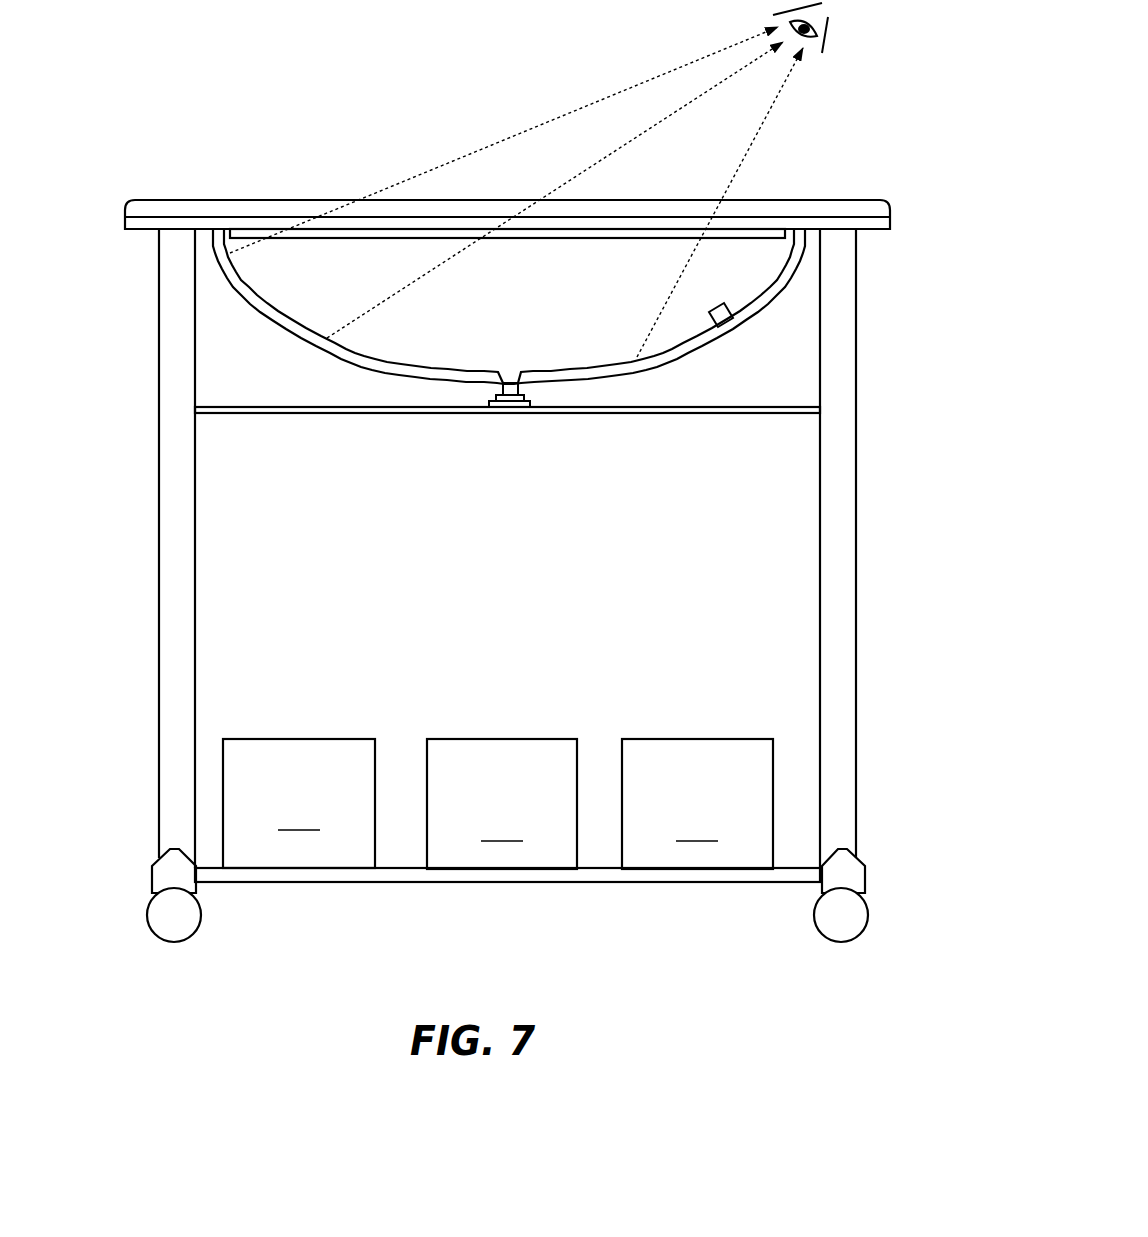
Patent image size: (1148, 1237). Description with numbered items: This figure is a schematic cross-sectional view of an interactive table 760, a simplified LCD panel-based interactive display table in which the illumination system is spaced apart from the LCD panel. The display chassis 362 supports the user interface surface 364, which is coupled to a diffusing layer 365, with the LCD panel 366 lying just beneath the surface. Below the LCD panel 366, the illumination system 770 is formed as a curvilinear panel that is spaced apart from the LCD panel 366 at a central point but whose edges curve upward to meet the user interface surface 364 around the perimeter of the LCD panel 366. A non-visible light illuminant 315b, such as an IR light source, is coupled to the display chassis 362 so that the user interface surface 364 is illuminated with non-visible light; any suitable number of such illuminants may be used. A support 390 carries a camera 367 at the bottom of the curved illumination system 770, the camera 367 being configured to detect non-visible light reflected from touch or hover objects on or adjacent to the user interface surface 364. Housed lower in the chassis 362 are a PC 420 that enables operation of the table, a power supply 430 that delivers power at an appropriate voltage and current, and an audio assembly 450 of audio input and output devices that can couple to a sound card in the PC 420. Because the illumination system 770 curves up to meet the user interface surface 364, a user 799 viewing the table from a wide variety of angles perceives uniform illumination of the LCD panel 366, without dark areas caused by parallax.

The interactive table 760 is at (480, 613).
The display chassis 362 is at (158, 332).
The user interface surface 364 is at (234, 200).
The diffusing layer 365 is at (789, 216).
The LCD panel 366 is at (364, 240).
The illumination system 770 is at (586, 366).
The non-visible light illuminant 315b is at (724, 301).
The camera 367 is at (496, 397).
The support 390 is at (365, 413).
The PC 420 is at (299, 803).
The power supply 430 is at (502, 804).
The audio assembly 450 is at (697, 804).
The user 799 is at (822, 42).